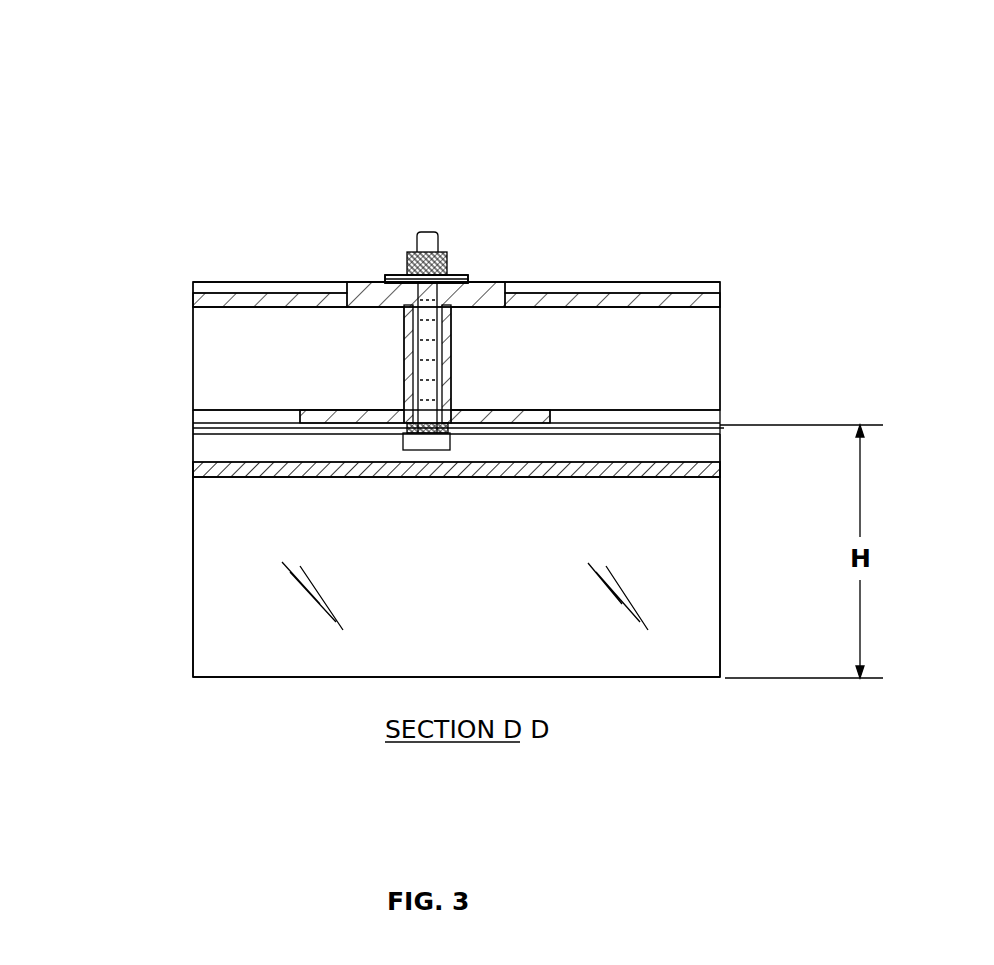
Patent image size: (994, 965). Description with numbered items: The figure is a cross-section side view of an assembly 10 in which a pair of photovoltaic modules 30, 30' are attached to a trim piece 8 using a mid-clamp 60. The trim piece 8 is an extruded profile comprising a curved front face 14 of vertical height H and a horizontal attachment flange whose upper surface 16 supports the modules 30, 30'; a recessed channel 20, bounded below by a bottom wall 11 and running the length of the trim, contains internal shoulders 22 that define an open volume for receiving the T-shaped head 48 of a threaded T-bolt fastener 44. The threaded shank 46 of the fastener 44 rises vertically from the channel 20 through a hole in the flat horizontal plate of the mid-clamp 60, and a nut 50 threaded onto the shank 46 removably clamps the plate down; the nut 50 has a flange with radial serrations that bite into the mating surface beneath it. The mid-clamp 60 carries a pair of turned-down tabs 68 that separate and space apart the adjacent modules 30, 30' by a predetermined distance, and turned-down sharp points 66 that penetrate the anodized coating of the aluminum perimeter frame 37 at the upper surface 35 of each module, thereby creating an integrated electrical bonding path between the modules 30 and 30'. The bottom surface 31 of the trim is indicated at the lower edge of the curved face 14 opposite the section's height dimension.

The assembly 10 is at (150, 92).
The trim piece 8 is at (105, 531).
The bottom wall 11 is at (720, 477).
The curved vertical face 14 is at (460, 586).
The upper surface 16 is at (214, 412).
The recessed channel 20 is at (695, 448).
The internal shoulder 22 is at (722, 428).
The photovoltaic module 30 is at (298, 358).
The photovoltaic module 30' is at (585, 358).
The bottom surface 31 is at (247, 677).
The upper surface 35 is at (276, 272).
The aluminum perimeter frame 37 is at (200, 292).
The T-bolt fastener 44 is at (425, 232).
The threaded shank 46 is at (445, 375).
The T-shaped head 48 is at (435, 440).
The nut 50 is at (445, 265).
The mid-clamp 60 is at (397, 196).
The sharp points 66 is at (387, 277).
The turned-down tabs 68 is at (448, 282).